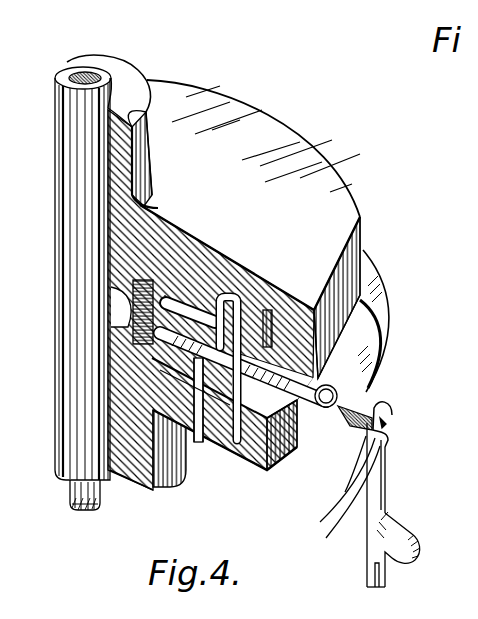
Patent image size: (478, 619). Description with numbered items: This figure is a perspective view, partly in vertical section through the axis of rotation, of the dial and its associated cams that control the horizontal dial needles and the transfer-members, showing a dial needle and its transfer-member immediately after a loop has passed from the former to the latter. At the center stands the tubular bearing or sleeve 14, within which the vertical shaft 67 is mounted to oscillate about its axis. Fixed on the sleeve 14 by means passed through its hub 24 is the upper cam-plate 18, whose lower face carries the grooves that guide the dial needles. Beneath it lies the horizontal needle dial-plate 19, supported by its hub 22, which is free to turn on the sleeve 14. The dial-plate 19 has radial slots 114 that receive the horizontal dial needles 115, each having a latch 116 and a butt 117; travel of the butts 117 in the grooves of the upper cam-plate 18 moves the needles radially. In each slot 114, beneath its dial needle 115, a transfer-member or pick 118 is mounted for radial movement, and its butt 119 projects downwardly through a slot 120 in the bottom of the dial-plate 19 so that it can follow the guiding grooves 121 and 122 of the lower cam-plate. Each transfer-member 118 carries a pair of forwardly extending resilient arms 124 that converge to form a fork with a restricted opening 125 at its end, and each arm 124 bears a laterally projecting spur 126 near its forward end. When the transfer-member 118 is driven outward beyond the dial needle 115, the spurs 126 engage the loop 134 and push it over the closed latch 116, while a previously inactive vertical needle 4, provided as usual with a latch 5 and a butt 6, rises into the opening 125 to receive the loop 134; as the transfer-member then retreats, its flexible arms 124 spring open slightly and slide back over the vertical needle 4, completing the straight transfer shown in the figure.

The central tubular bearing or sleeve 14 is at (57, 72).
The vertical shaft 67 is at (93, 76).
The hub 24 is at (135, 78).
The upper cam-plate 18 is at (234, 285).
The horizontal needle dial-plate 19 is at (356, 330).
The hub 22 is at (118, 372).
The radial slots 114 is at (165, 290).
The horizontal dial needles 115 is at (297, 323).
The latches 116 is at (345, 392).
The butts 117 is at (242, 285).
The transfer-member or pick 118 is at (206, 446).
The butt 119 is at (237, 430).
The slot 120 is at (207, 290).
The guiding groove 121 is at (200, 465).
The guiding groove 122 is at (216, 476).
The resilient arms 124 is at (350, 403).
The restricted opening 125 is at (387, 417).
The laterally projecting spur 126 is at (393, 431).
The loop 134 is at (350, 478).
The vertical needles 4 is at (367, 573).
The latch 5 is at (392, 470).
The butt 6 is at (406, 538).